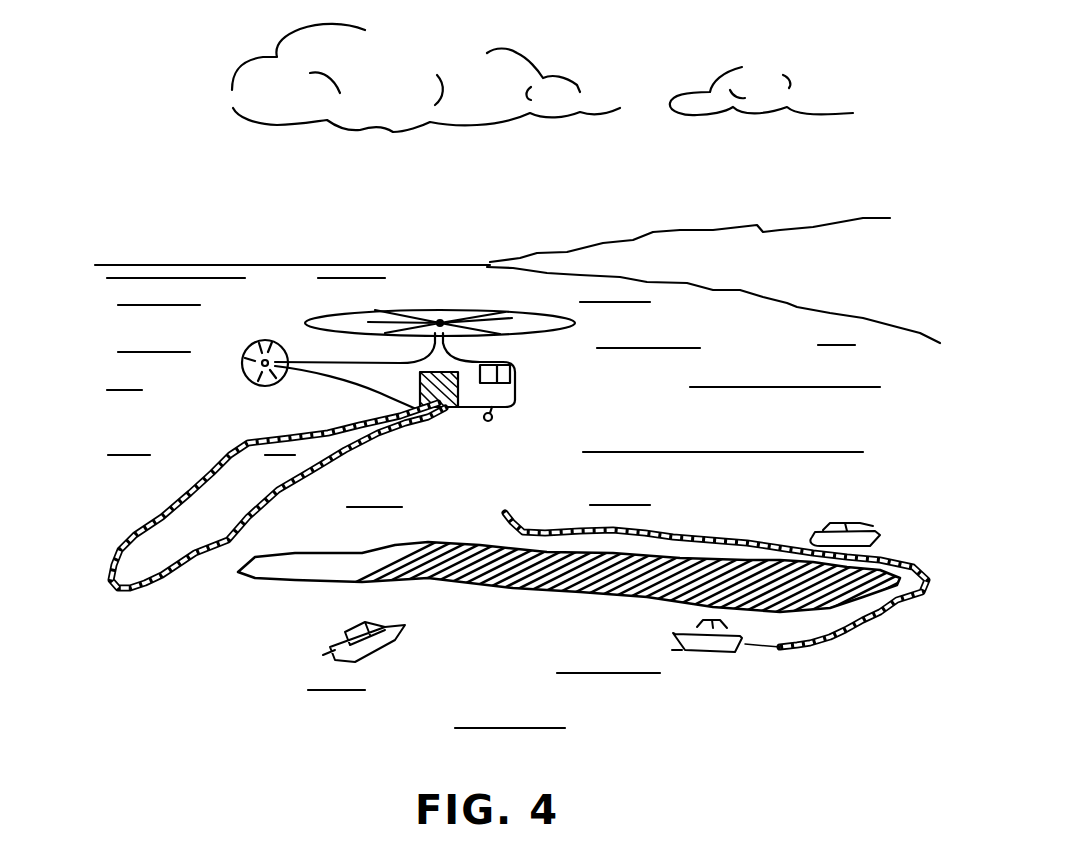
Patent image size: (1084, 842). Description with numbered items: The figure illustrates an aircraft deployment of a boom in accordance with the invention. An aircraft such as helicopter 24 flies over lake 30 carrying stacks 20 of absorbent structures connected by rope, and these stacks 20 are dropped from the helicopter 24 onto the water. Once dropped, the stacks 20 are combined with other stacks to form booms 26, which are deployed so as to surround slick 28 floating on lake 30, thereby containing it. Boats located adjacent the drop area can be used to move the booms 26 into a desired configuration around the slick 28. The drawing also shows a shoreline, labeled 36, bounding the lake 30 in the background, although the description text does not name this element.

The stacks 20 is at (452, 408).
The helicopter 24 is at (412, 395).
The booms 26 is at (670, 532).
The slick 28 is at (597, 588).
The lake 30 is at (713, 433).
The shoreline 36 is at (787, 305).